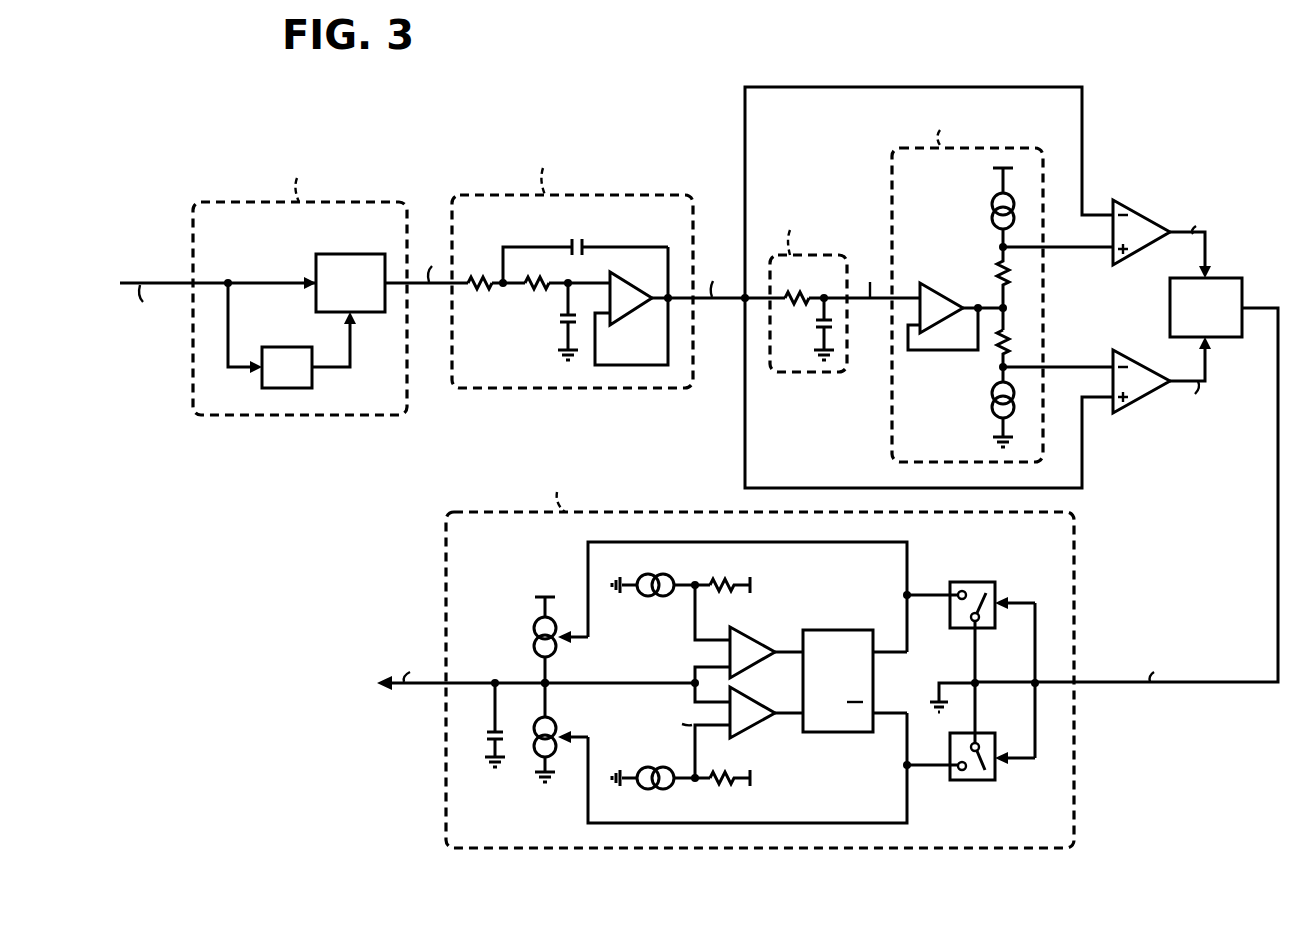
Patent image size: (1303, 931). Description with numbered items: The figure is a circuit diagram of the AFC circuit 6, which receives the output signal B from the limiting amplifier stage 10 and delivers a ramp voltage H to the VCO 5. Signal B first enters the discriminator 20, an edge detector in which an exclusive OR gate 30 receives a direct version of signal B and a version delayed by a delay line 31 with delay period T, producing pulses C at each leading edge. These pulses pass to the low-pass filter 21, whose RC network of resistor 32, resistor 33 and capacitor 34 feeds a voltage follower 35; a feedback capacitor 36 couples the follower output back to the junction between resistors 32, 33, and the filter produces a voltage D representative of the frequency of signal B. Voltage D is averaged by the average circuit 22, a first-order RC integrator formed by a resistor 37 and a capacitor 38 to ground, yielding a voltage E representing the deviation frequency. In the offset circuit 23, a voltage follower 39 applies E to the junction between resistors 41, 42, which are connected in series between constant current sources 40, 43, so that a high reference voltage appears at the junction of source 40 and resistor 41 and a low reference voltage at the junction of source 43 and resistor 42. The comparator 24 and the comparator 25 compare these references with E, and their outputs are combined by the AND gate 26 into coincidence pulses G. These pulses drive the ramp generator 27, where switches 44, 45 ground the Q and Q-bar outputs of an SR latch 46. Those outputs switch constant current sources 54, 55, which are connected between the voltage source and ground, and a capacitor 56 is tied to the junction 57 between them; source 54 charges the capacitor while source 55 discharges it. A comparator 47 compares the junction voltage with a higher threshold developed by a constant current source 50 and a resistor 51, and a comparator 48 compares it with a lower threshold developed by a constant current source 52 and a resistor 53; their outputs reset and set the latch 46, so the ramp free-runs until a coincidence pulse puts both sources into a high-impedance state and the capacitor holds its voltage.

The VCO 5 is at (481, 685).
The AFC circuit 6 is at (691, 453).
The limiting amplifier stage 10 is at (210, 246).
The discriminator 20 is at (270, 416).
The low-pass filter 21 is at (478, 389).
The average circuit 22 is at (799, 373).
The offset circuit 23 is at (892, 440).
The comparator 24 is at (1140, 212).
The comparator 25 is at (1125, 352).
The AND gate 26 is at (1232, 278).
The ramp generator 27 is at (446, 592).
The exclusive OR gate 30 is at (358, 254).
The delay line 31 is at (275, 348).
The resistor 32 is at (474, 279).
The resistor 33 is at (538, 288).
The capacitor 34 is at (563, 322).
The voltage follower 35 is at (627, 319).
The feedback capacitor 36 is at (579, 244).
The resistor 37 is at (796, 297).
The capacitor 38 is at (818, 330).
The voltage follower 39 is at (927, 284).
The constant current source 40 is at (993, 205).
The resistor 41 is at (997, 278).
The resistor 42 is at (1008, 343).
The constant current source 43 is at (992, 398).
The switch 44 is at (980, 582).
The switch 45 is at (975, 781).
The SR latch 46 is at (836, 630).
The comparator 47 is at (753, 637).
The comparator 48 is at (753, 735).
The constant current source 50 is at (641, 599).
The resistor 51 is at (730, 585).
The constant current source 52 is at (652, 768).
The resistor 53 is at (720, 776).
The constant current source 54 is at (534, 630).
The constant current source 55 is at (536, 736).
The capacitor 56 is at (490, 734).
The junction 57 is at (550, 684).